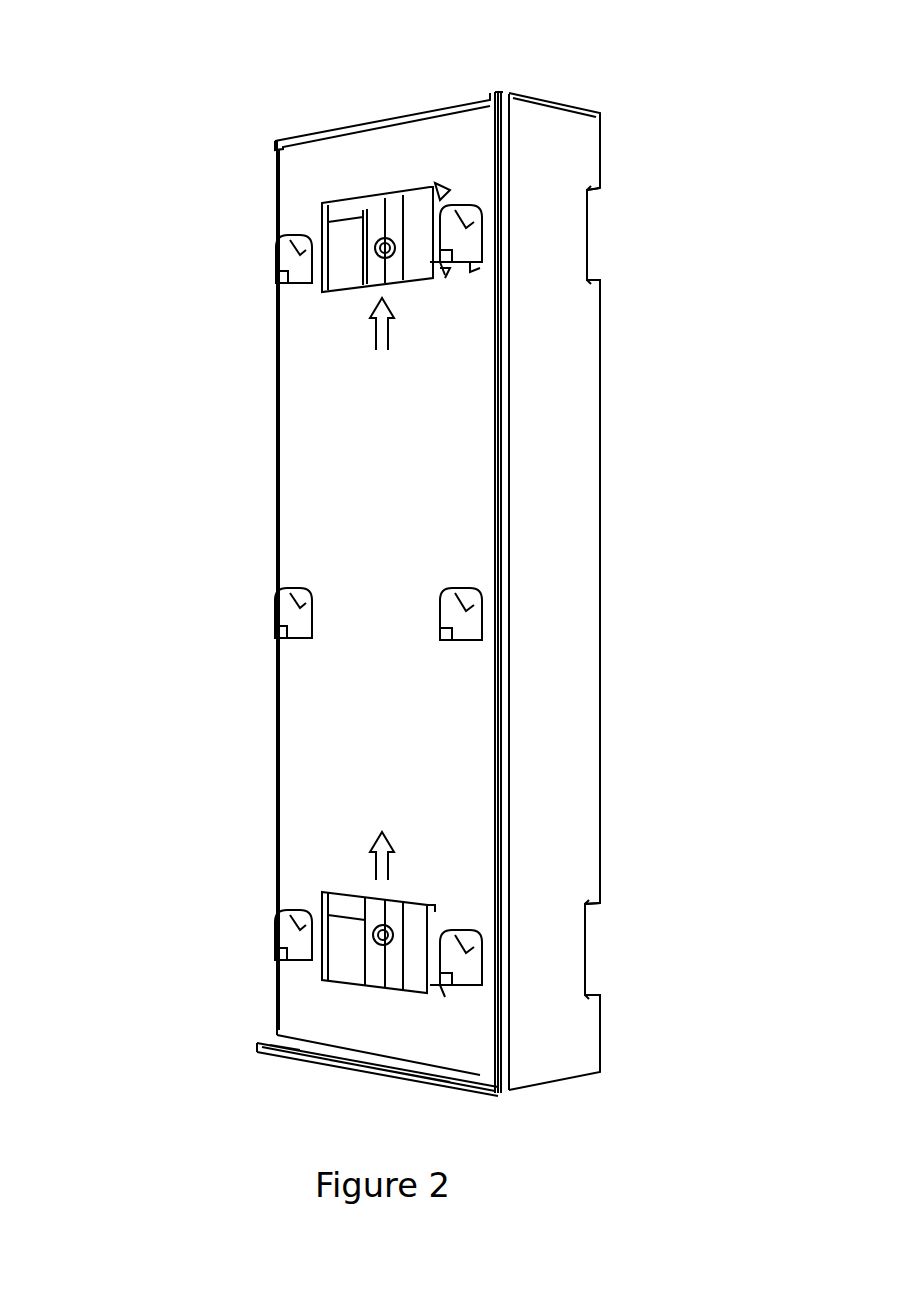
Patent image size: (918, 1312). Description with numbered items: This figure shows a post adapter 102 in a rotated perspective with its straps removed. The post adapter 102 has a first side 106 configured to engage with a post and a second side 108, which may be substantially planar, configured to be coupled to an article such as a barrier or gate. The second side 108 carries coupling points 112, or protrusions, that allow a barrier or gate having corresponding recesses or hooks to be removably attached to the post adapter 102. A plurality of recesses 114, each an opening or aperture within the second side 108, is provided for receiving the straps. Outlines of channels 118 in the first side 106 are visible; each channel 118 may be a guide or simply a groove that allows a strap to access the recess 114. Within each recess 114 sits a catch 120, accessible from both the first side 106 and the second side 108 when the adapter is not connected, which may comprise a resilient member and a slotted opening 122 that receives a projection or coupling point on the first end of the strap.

The post adapter 102 is at (146, 124).
The first side 106 is at (640, 493).
The second side 108 is at (228, 501).
The coupling points 112 is at (276, 613).
The recess 114 is at (330, 238).
The channel 118 is at (593, 222).
The catch 120 is at (405, 200).
The slotted opening 122 is at (382, 243).